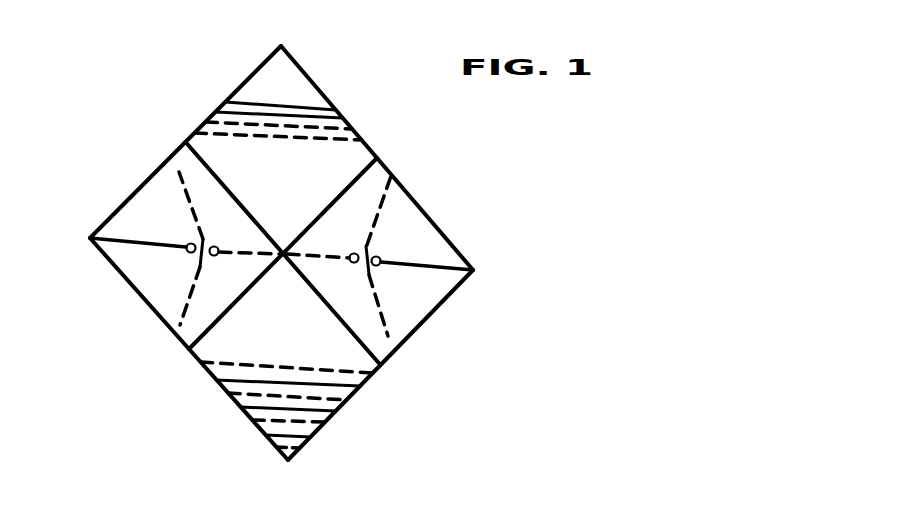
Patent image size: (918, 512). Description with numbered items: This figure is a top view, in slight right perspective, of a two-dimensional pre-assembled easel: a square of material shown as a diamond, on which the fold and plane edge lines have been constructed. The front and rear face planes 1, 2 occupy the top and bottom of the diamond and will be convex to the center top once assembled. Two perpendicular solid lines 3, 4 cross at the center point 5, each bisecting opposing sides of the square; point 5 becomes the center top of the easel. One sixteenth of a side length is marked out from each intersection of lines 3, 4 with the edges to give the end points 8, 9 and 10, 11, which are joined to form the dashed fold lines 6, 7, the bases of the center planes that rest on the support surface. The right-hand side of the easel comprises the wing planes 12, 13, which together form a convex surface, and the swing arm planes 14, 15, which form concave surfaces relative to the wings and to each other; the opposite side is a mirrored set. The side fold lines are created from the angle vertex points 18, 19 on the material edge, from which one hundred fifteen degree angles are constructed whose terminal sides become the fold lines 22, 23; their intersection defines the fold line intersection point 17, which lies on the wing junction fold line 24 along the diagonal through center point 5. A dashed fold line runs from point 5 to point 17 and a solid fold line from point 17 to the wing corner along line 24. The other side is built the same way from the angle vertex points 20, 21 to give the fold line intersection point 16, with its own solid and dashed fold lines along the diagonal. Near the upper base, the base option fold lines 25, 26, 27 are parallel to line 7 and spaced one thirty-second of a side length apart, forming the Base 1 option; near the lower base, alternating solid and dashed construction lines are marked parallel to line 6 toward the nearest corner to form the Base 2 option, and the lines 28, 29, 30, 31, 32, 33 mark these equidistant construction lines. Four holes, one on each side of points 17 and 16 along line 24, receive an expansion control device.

The front face plane 1 is at (392, 376).
The rear face plane 2 is at (382, 139).
The perpendicular solid line 3 is at (202, 94).
The perpendicular solid line 4 is at (211, 404).
The center point 5 is at (291, 229).
The dashed fold line 6 is at (263, 383).
The dashed fold line 7 is at (251, 107).
The end point 8 is at (226, 354).
The end point 9 is at (356, 357).
The end point 10 is at (241, 167).
The end point 11 is at (349, 174).
The wing plane 12 is at (443, 217).
The wing plane 13 is at (452, 310).
The swing arm plane 14 is at (399, 368).
The swing arm plane 15 is at (392, 153).
The fold line intersection point 16 is at (357, 244).
The fold line intersection point 17 is at (241, 237).
The angle vertex point 18 is at (179, 301).
The angle vertex point 19 is at (176, 201).
The angle vertex point 20 is at (422, 319).
The angle vertex point 21 is at (414, 217).
The fold line 22 is at (139, 293).
The fold line 23 is at (138, 187).
The wing junction fold line 24 is at (113, 243).
The base option fold line 25 is at (247, 91).
The base option fold line 26 is at (258, 78).
The base option fold line 27 is at (274, 67).
The fold line 28 is at (257, 401).
The fold line 29 is at (259, 418).
The fold line 30 is at (263, 434).
The fold line 31 is at (268, 449).
The fold line 32 is at (266, 465).
The fold line 33 is at (277, 477).